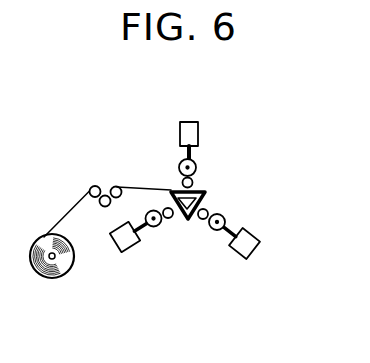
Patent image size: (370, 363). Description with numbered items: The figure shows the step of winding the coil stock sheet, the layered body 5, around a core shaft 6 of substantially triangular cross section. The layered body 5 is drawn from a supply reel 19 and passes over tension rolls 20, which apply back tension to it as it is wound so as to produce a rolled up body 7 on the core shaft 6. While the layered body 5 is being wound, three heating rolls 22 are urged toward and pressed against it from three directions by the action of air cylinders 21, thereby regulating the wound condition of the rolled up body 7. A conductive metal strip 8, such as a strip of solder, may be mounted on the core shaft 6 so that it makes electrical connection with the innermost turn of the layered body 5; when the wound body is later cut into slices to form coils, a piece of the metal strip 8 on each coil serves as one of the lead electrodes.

The layered body 5 is at (66, 214).
The core shaft 6 is at (206, 203).
The rolled up body 7 is at (199, 196).
The conductive metal strip 8 is at (194, 221).
The supply reel 19 is at (50, 278).
The tension rolls 20 is at (111, 206).
The air cylinders 21 is at (199, 133).
The heating rolls 22 is at (179, 166).